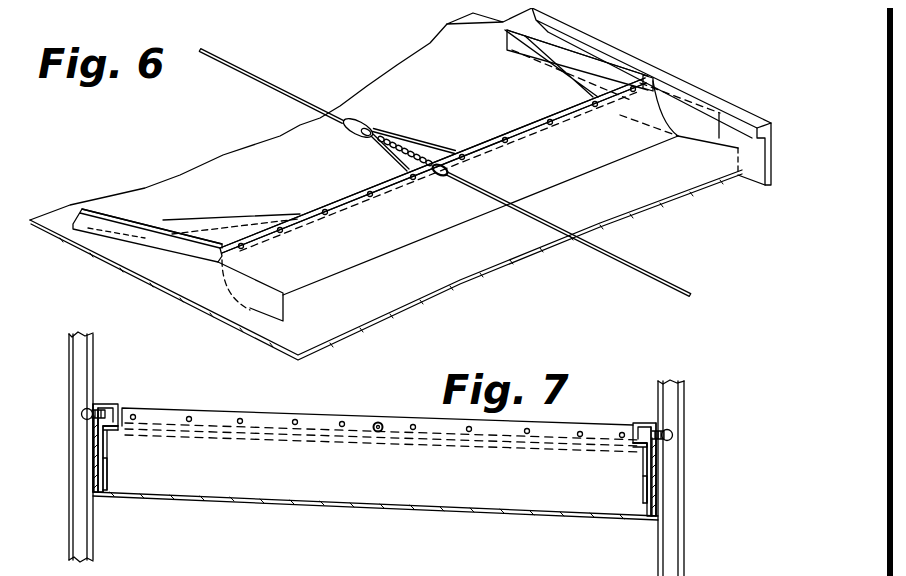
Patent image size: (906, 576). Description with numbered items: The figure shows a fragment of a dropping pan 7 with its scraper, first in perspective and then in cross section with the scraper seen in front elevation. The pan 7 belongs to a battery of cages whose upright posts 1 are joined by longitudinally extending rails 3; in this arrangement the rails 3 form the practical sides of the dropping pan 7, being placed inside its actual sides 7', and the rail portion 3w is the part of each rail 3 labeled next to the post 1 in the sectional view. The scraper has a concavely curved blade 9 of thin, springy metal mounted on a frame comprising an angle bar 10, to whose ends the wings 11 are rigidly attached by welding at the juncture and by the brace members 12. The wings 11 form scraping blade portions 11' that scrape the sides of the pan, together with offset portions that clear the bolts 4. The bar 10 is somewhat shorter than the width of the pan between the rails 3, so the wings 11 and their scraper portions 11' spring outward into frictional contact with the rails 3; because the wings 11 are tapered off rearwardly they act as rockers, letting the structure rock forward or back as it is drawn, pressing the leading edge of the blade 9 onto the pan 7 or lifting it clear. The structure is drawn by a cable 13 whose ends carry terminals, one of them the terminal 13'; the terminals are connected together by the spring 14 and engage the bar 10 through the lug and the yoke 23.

In FIG. 7, the post 1 is at (78, 353).
In FIG. 6, the rail 3 is at (747, 160).
In FIG. 7, the rail 3 is at (93, 452).
In FIG. 7, the channel web 3w is at (76, 427).
In FIG. 7, the bolt 4 is at (72, 407).
In FIG. 6, the dropping pan 7 is at (386, 184).
In FIG. 7, the dropping pan 7 is at (375, 512).
In FIG. 7, the actual side of the dropping pan 7' is at (376, 466).
In FIG. 6, the blade 9 is at (449, 186).
In FIG. 7, the blade 9 is at (381, 443).
In FIG. 6, the angle bar 10 is at (480, 126).
In FIG. 6, the wing 11 is at (396, 152).
In FIG. 7, the wing 11 is at (375, 464).
In FIG. 6, the scraping blade portion 11' is at (250, 290).
In FIG. 7, the scraping blade portion 11' is at (376, 480).
In FIG. 6, the brace member 12 is at (223, 217).
In FIG. 6, the cable 13 is at (444, 173).
In FIG. 7, the cable 13 is at (360, 412).
In FIG. 6, the terminal 13' is at (470, 172).
In FIG. 7, the terminal 13' is at (392, 409).
In FIG. 6, the spring 14 is at (382, 143).
In FIG. 6, the yoke 23 is at (405, 133).